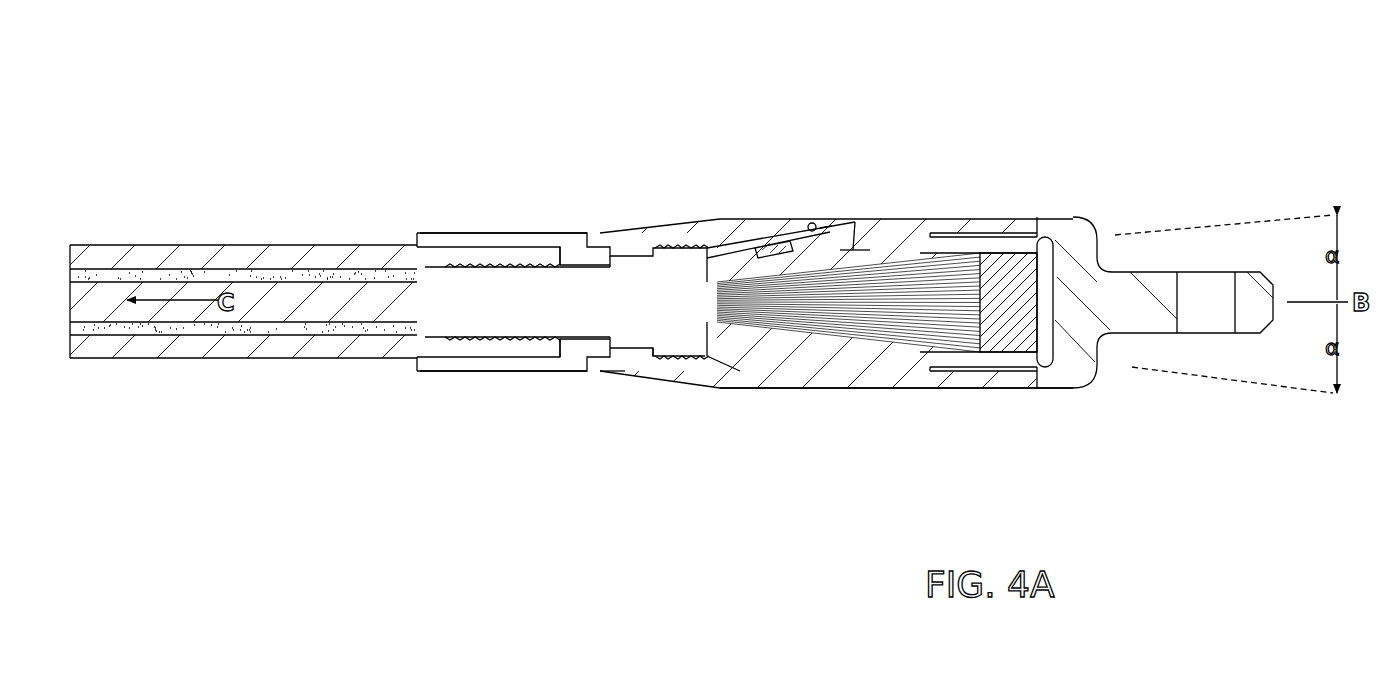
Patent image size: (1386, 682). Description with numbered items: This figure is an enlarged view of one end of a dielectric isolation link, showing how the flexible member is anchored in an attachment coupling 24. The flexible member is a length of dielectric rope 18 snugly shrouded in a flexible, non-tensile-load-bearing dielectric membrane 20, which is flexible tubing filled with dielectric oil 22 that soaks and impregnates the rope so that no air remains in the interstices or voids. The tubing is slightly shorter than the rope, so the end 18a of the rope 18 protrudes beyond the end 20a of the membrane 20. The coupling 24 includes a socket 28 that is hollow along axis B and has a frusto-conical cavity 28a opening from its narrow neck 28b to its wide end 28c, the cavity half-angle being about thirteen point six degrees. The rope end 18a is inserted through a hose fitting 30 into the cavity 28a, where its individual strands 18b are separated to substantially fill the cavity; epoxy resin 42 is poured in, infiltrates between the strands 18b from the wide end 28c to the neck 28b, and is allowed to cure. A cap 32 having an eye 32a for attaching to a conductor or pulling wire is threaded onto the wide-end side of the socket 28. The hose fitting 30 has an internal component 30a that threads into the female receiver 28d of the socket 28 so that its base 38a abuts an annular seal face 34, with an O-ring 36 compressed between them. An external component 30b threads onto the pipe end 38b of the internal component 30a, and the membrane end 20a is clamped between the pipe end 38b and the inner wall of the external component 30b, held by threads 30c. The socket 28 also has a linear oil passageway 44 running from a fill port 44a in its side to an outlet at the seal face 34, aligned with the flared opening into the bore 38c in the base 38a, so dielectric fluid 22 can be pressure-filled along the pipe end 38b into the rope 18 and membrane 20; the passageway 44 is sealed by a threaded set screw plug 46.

The dielectric rope 18 is at (180, 345).
The end of rope 18a is at (851, 244).
The strands of rope end 18b is at (872, 240).
The flexible dielectric membrane 20 is at (270, 320).
The end of flexible membrane 20a is at (544, 340).
The dielectric oil 22 is at (203, 276).
The attachment coupling 24 is at (708, 478).
The socket 28 is at (800, 390).
The conical cavity 28a is at (992, 275).
The neck of cavity 28b is at (728, 372).
The wide end of cavity 28c is at (928, 380).
The female receiver of socket 28d is at (618, 376).
The hose fitting 30 is at (566, 216).
The internal component of hose fitting 30a is at (640, 243).
The external component of hose fitting 30b is at (520, 231).
The threads 30c is at (467, 252).
The cap 32 is at (1098, 358).
The eye 32a is at (1204, 342).
The annular seal face 34 is at (676, 375).
The O-ring 36 is at (746, 230).
The base of internal component 38a is at (711, 241).
The pipe end of internal component 38b is at (468, 346).
The bore 38c is at (656, 246).
The resin 42 is at (1040, 372).
The oil passageway 44 is at (752, 238).
The fill port 44a is at (832, 218).
The threaded set screw plug 46 is at (817, 208).